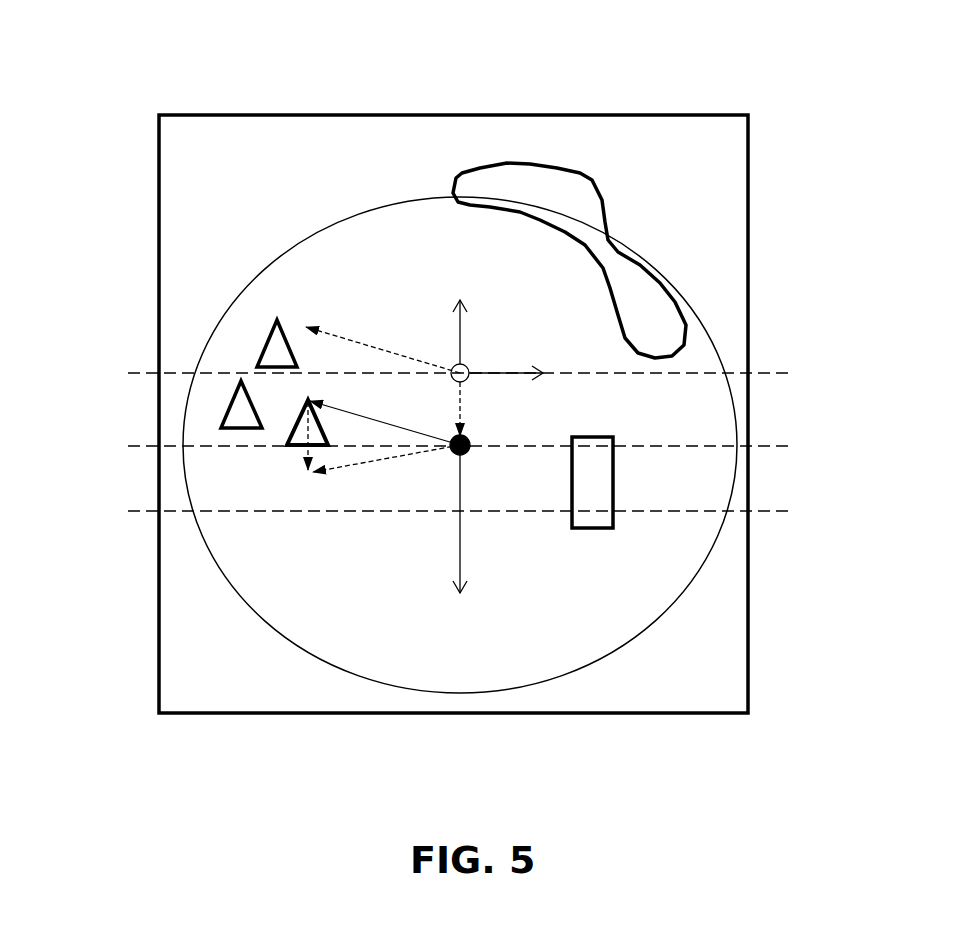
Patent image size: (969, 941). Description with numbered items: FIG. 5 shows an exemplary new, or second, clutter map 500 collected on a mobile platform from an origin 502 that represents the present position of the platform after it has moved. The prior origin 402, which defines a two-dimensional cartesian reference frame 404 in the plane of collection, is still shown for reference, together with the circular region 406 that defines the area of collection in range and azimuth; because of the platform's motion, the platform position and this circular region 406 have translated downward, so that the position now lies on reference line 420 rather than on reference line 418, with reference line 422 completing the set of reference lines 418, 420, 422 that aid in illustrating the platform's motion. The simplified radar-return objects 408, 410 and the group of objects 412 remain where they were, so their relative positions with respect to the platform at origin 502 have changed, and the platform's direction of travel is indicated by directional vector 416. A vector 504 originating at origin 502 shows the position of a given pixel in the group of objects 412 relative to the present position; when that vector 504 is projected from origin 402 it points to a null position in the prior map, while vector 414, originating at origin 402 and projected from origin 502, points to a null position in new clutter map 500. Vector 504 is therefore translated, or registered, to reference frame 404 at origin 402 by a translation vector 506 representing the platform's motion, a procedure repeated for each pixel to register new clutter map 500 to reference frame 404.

The new clutter map 500 is at (121, 75).
The origin 402 is at (470, 367).
The reference frame 404 is at (470, 322).
The circular region 406 is at (640, 256).
The object 408 is at (613, 436).
The object 410 is at (452, 186).
The group of objects 412 is at (244, 350).
The vector 414 is at (342, 474).
The directional vector 416 is at (455, 553).
The reference line 418 is at (790, 373).
The reference line 420 is at (790, 446).
The reference line 422 is at (790, 511).
The origin 502 is at (470, 458).
The vector 504 is at (348, 333).
The translation vector 506 is at (468, 406).